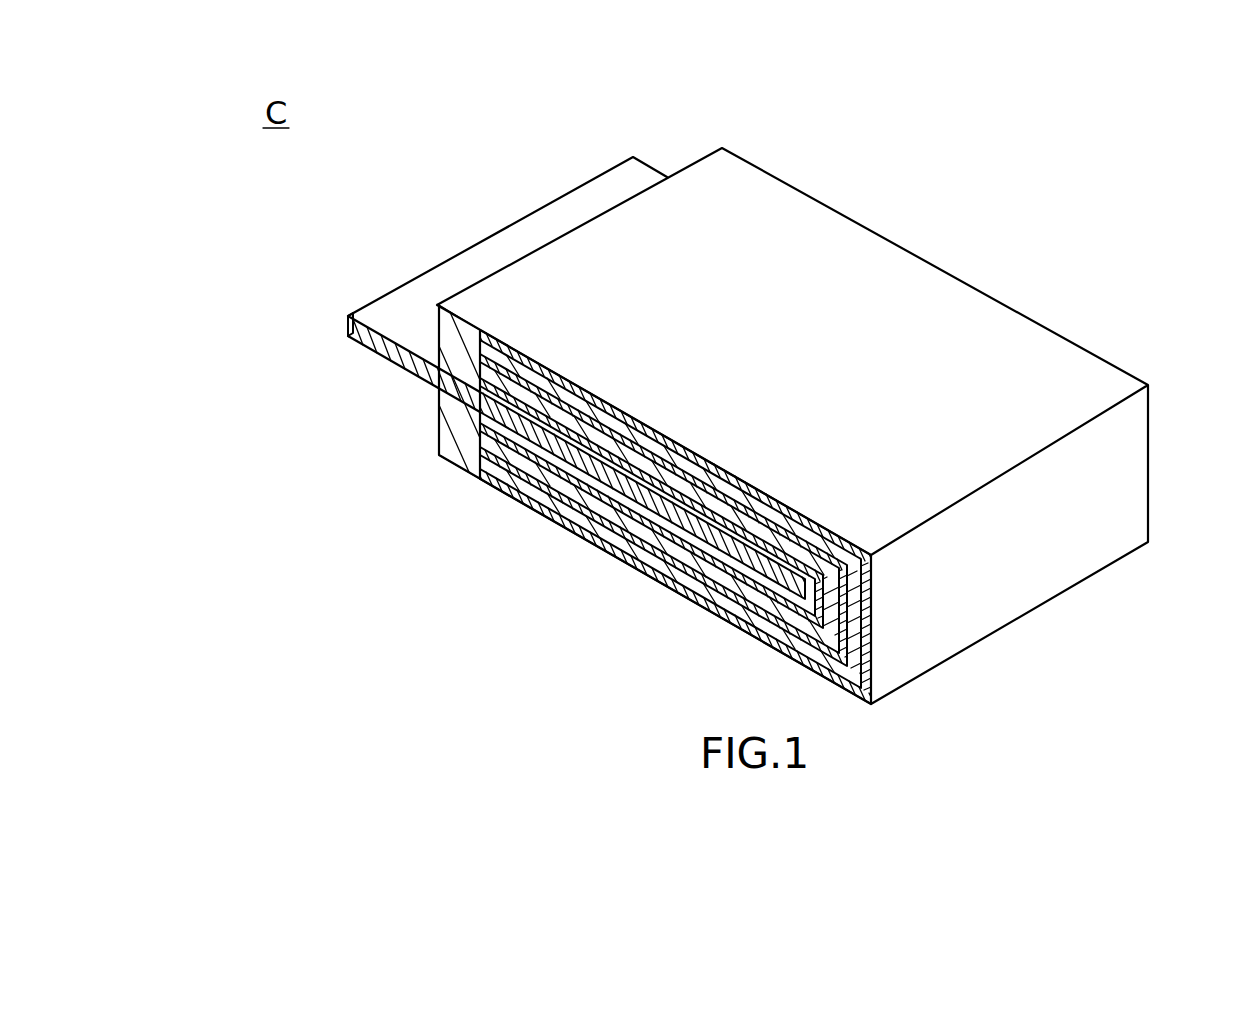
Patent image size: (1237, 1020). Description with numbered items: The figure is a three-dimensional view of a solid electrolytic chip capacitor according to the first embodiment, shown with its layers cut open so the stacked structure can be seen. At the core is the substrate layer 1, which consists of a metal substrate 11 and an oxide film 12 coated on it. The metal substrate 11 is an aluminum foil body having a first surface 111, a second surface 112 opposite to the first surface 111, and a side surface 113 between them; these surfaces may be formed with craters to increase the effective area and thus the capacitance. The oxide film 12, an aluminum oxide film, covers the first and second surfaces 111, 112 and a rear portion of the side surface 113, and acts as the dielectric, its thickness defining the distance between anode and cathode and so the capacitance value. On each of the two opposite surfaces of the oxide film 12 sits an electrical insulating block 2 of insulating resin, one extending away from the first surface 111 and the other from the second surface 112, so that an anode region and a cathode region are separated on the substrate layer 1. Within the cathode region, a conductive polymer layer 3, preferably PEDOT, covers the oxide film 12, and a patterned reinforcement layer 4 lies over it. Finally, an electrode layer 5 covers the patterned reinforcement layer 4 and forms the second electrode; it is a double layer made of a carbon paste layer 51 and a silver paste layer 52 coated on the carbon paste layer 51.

The substrate layer 1 is at (763, 544).
The metal substrate 11 is at (866, 636).
The oxide film 12 is at (866, 604).
The electrical insulating block 2 is at (470, 455).
The conductive polymer layer 3 is at (517, 498).
The patterned reinforcement layer 4 is at (597, 513).
The electrode layer 5 is at (659, 494).
The carbon paste layer 51 is at (732, 505).
The silver paste layer 52 is at (800, 517).
The first surface 111 is at (385, 312).
The second surface 112 is at (387, 363).
The side surface 113 is at (355, 348).